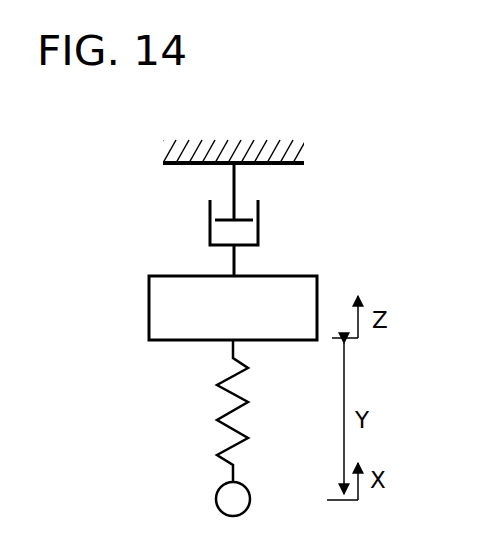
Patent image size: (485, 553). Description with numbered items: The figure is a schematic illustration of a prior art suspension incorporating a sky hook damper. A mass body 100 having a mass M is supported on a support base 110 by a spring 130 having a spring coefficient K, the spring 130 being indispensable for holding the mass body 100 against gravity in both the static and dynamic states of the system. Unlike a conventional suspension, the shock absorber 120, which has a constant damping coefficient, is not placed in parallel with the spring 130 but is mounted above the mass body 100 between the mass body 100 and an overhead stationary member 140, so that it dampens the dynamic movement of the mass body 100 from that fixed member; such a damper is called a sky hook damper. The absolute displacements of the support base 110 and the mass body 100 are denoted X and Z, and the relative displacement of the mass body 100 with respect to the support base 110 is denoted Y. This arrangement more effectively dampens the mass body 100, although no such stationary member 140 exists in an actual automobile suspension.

The mass body 100 is at (149, 313).
The support base 110 is at (216, 500).
The shock absorber 120 is at (210, 226).
The spring 130 is at (217, 420).
The stationary member 140 is at (304, 150).